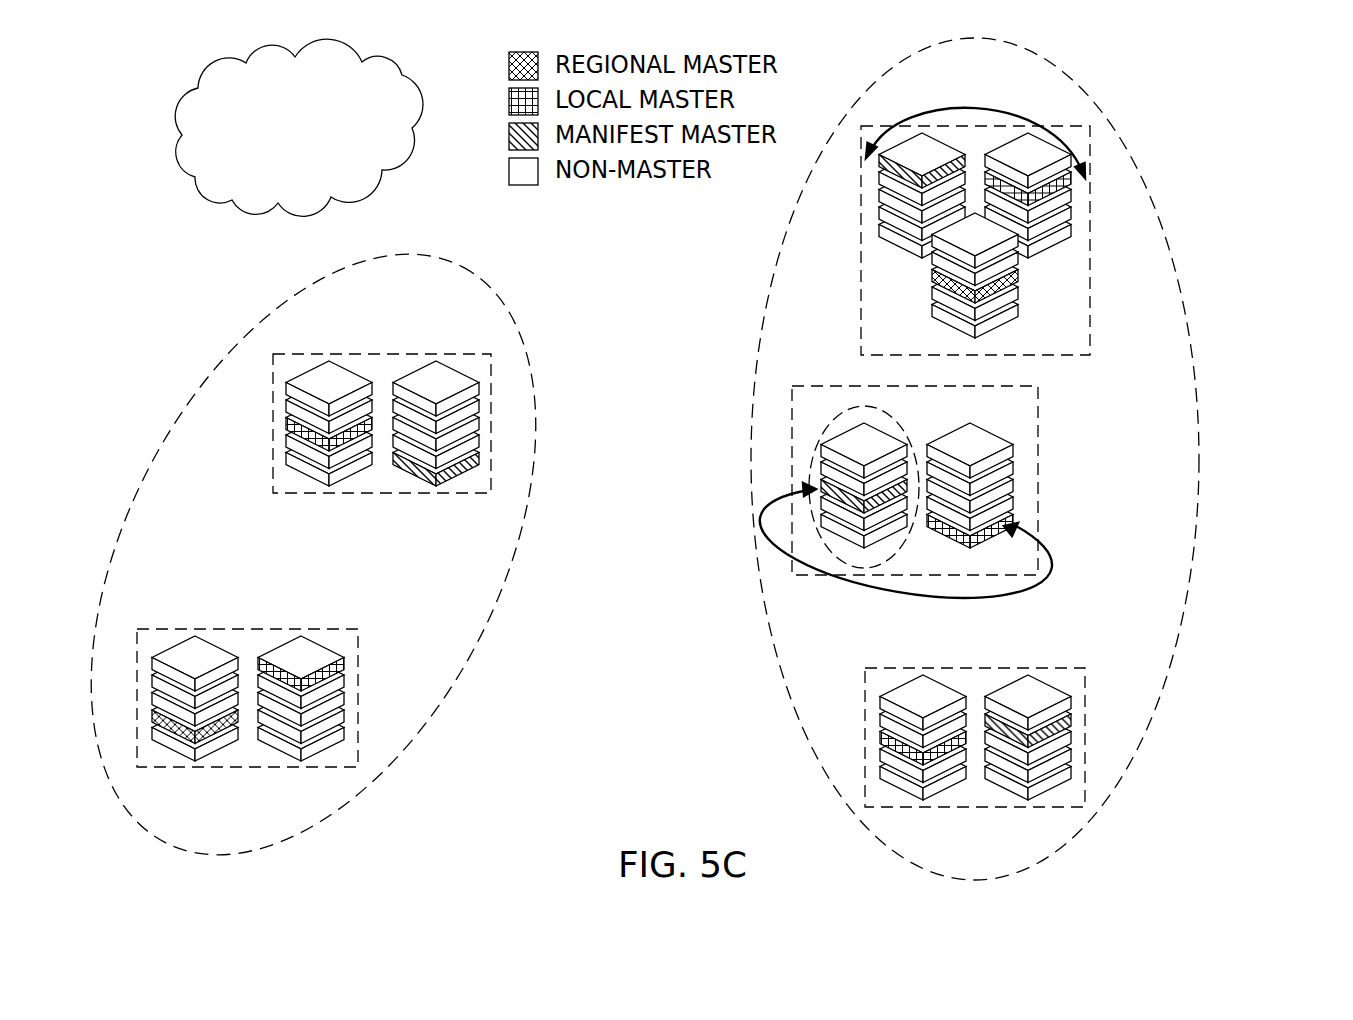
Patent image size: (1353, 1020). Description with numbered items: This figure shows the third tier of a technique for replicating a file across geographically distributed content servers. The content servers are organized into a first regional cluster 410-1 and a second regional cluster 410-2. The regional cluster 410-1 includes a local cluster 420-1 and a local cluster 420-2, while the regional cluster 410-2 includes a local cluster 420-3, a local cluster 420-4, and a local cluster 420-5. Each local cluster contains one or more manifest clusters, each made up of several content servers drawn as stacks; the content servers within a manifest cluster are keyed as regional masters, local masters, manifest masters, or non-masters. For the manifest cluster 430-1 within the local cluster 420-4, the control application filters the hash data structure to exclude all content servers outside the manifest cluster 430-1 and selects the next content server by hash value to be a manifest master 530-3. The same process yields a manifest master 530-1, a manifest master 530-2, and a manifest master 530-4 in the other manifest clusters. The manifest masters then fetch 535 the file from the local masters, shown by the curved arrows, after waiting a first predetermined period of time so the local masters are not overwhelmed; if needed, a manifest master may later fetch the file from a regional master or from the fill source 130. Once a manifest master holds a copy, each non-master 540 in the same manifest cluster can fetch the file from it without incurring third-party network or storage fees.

The fill source 130 is at (328, 156).
The regional cluster 410-1 is at (467, 663).
The regional cluster 410-2 is at (1188, 607).
The local cluster 420-1 is at (451, 389).
The local cluster 420-2 is at (248, 630).
The local cluster 420-3 is at (1030, 231).
The local cluster 420-4 is at (895, 518).
The local cluster 420-5 is at (973, 737).
The manifest cluster 430-1 is at (784, 487).
The manifest master 530-1 is at (478, 441).
The manifest master 530-2 is at (876, 162).
The manifest master 530-3 is at (820, 481).
The manifest master 530-4 is at (1072, 722).
The fetch 535 is at (892, 587).
The non-master 540 is at (1014, 452).